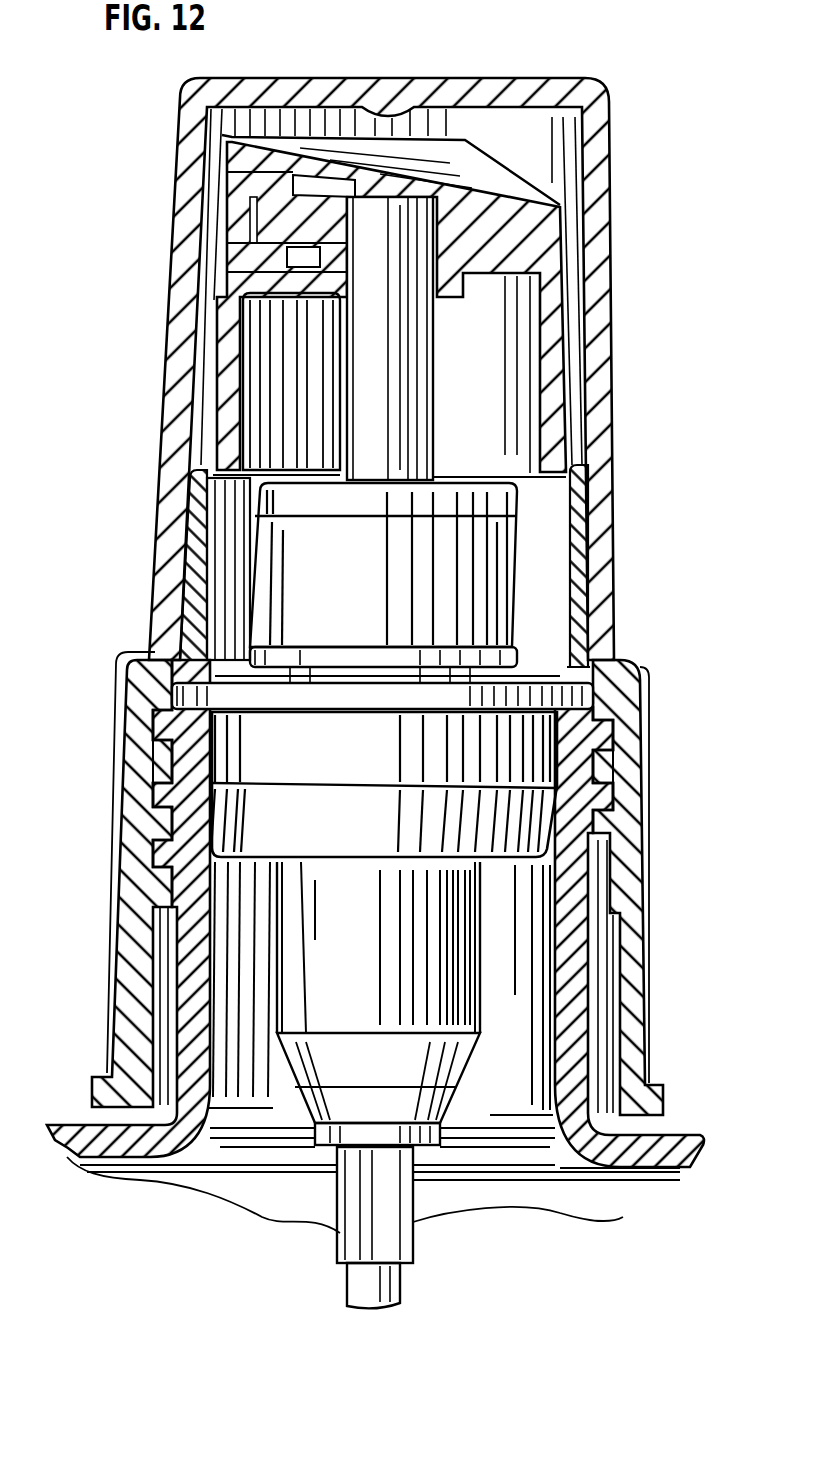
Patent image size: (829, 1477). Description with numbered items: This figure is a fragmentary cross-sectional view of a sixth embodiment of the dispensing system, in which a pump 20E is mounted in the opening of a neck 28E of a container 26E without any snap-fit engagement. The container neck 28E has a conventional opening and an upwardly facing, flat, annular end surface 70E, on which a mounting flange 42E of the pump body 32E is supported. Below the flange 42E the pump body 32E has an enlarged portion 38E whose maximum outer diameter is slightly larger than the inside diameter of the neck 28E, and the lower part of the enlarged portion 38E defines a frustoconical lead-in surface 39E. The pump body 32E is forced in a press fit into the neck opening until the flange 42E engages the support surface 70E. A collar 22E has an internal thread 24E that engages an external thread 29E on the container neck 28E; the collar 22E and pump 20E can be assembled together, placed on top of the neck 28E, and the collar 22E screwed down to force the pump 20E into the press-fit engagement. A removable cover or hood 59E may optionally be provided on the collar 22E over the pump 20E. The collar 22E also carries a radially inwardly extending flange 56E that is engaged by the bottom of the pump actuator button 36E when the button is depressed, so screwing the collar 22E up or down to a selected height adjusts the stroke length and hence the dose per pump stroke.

The pump 20E is at (547, 180).
The pump actuator button 36E is at (545, 237).
The removable cover or hood 59E is at (600, 356).
The pump body 32E is at (526, 541).
The radially inwardly extending flange 56E is at (576, 612).
The mounting flange 42E is at (548, 672).
The upwardly facing, flat, annular end surface 70E is at (622, 652).
The external thread 29E is at (602, 733).
The internal thread 24E is at (600, 783).
The collar 22E is at (656, 806).
The frustoconical lead-in surface 39E is at (552, 855).
The enlarged portion 38E is at (498, 870).
The container neck 28E is at (578, 990).
The container 26E is at (623, 1170).